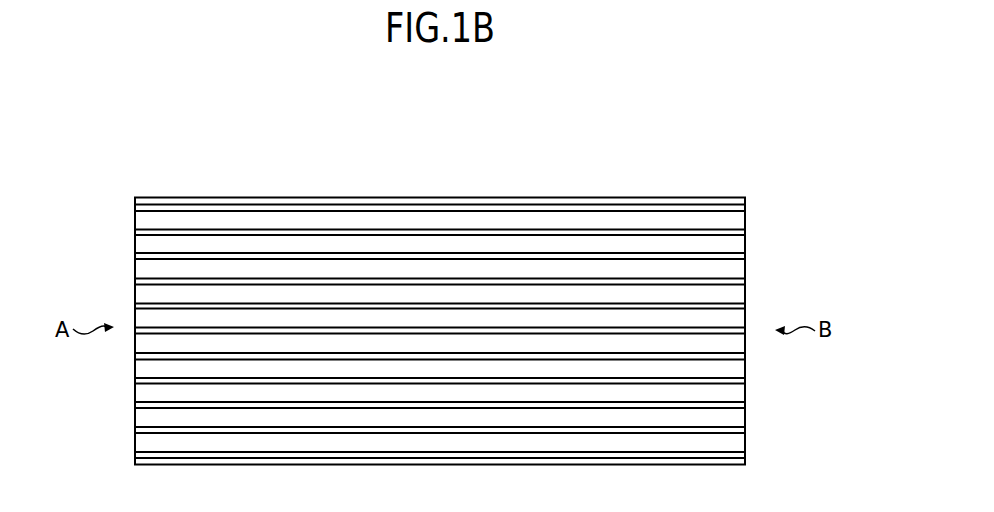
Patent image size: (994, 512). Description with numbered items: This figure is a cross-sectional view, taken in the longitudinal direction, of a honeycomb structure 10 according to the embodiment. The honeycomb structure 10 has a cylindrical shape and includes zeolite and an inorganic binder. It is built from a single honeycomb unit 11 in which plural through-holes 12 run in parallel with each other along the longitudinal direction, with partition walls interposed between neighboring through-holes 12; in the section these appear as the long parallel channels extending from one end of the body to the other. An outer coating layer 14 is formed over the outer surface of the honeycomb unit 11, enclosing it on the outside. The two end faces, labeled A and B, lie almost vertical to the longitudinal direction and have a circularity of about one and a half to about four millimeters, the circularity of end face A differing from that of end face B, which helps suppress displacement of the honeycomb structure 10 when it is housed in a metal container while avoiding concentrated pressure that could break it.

The honeycomb structure 10 is at (643, 141).
The honeycomb unit 11 is at (746, 426).
The through-holes 12 is at (746, 217).
The outer coating layer 14 is at (441, 197).